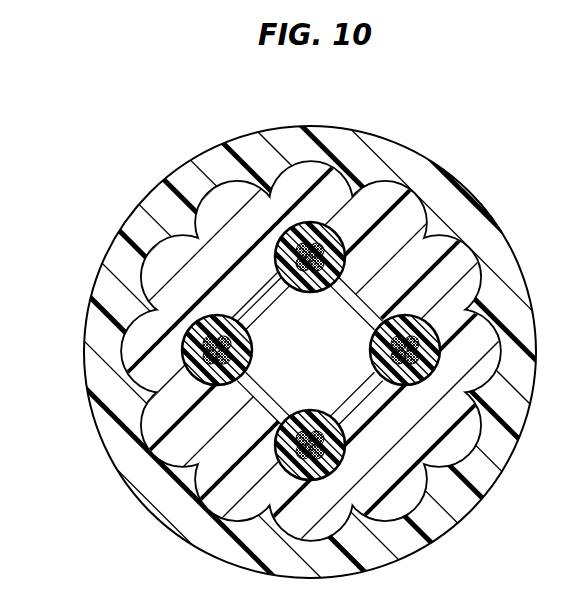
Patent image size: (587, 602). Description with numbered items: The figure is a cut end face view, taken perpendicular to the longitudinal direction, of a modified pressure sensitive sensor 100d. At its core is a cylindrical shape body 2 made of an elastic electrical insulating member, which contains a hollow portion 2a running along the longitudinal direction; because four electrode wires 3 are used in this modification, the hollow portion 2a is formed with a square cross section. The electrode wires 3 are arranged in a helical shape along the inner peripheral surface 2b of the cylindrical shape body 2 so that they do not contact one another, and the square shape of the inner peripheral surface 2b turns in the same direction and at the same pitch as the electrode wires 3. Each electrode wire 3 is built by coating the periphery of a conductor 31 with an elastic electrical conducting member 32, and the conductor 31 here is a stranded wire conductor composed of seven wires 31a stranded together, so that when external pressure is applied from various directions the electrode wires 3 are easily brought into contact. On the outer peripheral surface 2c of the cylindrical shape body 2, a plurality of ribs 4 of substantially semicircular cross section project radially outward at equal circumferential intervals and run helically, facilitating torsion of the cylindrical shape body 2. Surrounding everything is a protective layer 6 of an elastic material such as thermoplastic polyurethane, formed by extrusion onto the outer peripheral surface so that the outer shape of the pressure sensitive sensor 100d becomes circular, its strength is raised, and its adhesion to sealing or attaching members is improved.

The pressure sensitive sensor 100d is at (297, 301).
The cylindrical shape body 2 is at (291, 301).
The hollow portion 2a is at (424, 238).
The inner peripheral surface 2b is at (266, 304).
The outer peripheral surface 2c is at (473, 306).
The electrode wire 3 is at (232, 333).
The conductor 31 is at (190, 351).
The wire 31a is at (186, 337).
The elastic electrical conducting member 32 is at (146, 400).
The rib 4 is at (494, 363).
The protective layer 6 is at (447, 500).